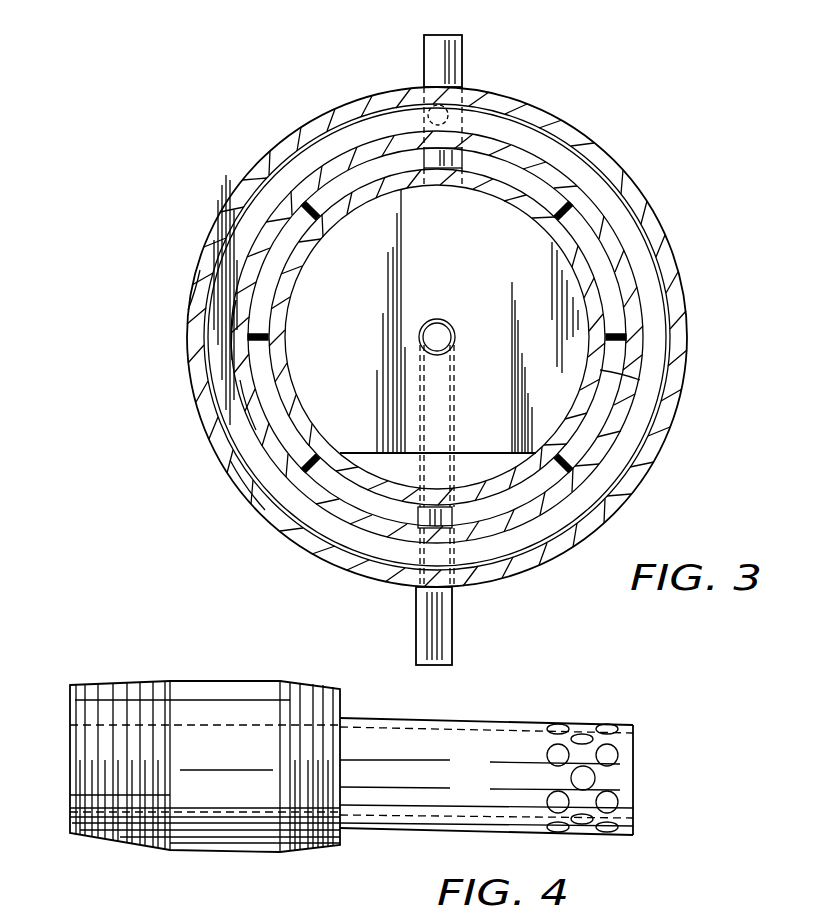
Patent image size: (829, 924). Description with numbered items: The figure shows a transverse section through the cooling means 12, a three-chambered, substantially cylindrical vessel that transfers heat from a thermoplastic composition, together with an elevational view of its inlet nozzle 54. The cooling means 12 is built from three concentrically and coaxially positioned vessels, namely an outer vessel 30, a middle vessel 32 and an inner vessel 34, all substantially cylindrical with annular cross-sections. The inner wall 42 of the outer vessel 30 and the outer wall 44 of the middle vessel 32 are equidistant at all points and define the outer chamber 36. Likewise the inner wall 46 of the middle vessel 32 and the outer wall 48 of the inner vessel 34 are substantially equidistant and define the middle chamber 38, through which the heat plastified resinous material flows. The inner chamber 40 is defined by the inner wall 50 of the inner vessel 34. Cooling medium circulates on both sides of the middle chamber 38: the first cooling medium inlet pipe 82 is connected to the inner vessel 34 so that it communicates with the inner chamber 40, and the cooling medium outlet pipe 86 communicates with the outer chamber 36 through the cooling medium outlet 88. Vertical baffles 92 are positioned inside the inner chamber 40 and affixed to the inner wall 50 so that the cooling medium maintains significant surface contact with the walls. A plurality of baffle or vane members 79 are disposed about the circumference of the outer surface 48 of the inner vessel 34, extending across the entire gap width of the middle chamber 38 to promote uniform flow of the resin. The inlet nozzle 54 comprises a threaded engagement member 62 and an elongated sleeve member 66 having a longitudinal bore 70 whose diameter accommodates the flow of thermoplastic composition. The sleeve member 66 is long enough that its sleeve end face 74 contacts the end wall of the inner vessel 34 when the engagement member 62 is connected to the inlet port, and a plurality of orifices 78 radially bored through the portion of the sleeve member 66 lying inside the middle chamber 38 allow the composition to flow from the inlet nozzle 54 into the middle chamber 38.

In FIG. 3, the cooling means 12 is at (261, 102).
In FIG. 3, the outer vessel 30 is at (680, 300).
In FIG. 3, the middle vessel 32 is at (603, 230).
In FIG. 3, the inner vessel 34 is at (570, 200).
In FIG. 3, the outer chamber 36 is at (325, 150).
In FIG. 3, the middle chamber 38 is at (302, 212).
In FIG. 3, the inner chamber 40 is at (318, 288).
In FIG. 3, the inner wall of outer vessel 42 is at (215, 288).
In FIG. 3, the outer wall of middle vessel 44 is at (236, 328).
In FIG. 3, the inner wall of middle vessel 46 is at (243, 407).
In FIG. 3, the outer wall of inner vessel 48 is at (247, 483).
In FIG. 3, the inner wall of inner vessel 50 is at (586, 380).
In FIG. 3, the baffle or vane members 79 is at (312, 218).
In FIG. 3, the first cooling medium inlet pipe 82 is at (416, 632).
In FIG. 3, the cooling medium outlet pipe 86 is at (443, 62).
In FIG. 3, the cooling medium outlet 88 is at (430, 103).
In FIG. 3, the vertical baffles 92 is at (484, 469).
In FIG. 4, the inlet nozzle 54 is at (235, 652).
In FIG. 4, the threaded engagement member 62 is at (122, 700).
In FIG. 4, the elongated sleeve member 66 is at (488, 722).
In FIG. 4, the longitudinal bore 70 is at (447, 773).
In FIG. 4, the sleeve end face 74 is at (638, 752).
In FIG. 4, the orifices 78 is at (612, 800).